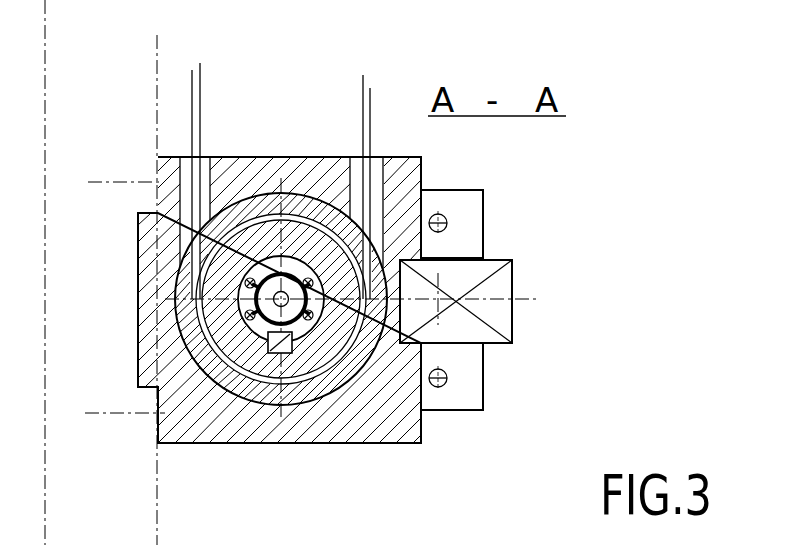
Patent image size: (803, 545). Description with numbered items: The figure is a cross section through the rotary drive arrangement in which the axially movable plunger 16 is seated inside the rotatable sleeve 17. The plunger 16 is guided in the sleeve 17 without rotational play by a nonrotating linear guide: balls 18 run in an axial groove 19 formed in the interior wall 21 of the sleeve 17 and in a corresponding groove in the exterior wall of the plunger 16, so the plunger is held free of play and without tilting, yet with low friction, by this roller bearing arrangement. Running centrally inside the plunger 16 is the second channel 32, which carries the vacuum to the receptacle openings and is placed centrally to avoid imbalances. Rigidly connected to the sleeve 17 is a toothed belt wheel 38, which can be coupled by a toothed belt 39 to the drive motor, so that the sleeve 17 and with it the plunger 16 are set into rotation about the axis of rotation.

The plunger 16 is at (240, 284).
The sleeve 17 is at (293, 327).
The balls 18 is at (284, 281).
The groove 19 is at (208, 346).
The interior wall 21 is at (289, 281).
The second channel 32 is at (240, 297).
The toothed belt wheel 38 is at (253, 362).
The toothed belt 39 is at (372, 100).